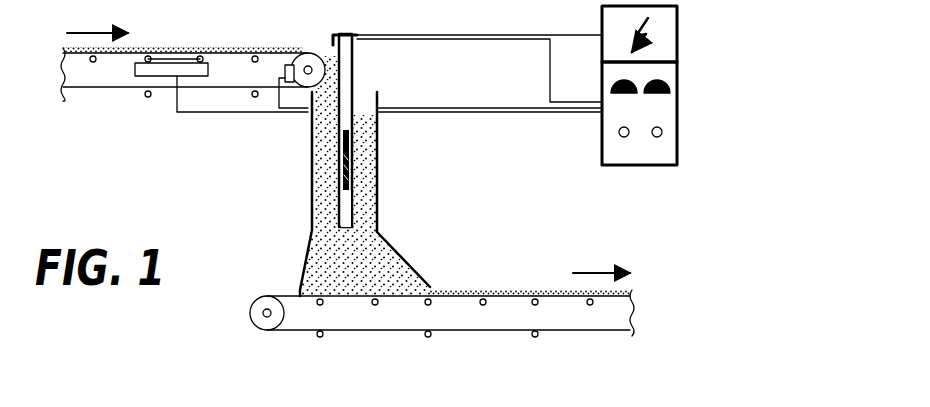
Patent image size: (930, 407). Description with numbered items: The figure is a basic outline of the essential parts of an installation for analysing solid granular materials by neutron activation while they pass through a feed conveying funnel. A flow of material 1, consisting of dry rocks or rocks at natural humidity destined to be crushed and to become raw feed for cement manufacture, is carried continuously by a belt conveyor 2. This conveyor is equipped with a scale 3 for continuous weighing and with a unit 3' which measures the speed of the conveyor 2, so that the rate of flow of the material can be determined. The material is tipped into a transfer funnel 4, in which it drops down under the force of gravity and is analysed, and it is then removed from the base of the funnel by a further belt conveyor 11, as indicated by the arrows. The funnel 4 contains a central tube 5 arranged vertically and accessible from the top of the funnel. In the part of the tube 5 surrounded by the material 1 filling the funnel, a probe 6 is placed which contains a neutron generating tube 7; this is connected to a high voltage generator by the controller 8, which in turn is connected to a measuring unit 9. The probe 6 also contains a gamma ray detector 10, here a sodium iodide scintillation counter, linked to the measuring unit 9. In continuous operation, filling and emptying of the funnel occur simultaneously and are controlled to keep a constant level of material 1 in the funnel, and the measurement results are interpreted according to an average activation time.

The flow of material 1 is at (230, 48).
The belt conveyor 2 is at (110, 90).
The scale 3 is at (368, 101).
The unit measuring conveyor speed 3' is at (440, 54).
The transfer funnel 4 is at (303, 209).
The central tube 5 is at (356, 80).
The probe 6 is at (334, 165).
The neutron generating tube 7 is at (352, 162).
The controller 8 is at (665, 27).
The measuring unit 9 is at (665, 112).
The gamma ray detector 10 is at (350, 173).
The belt conveyor 11 is at (520, 338).